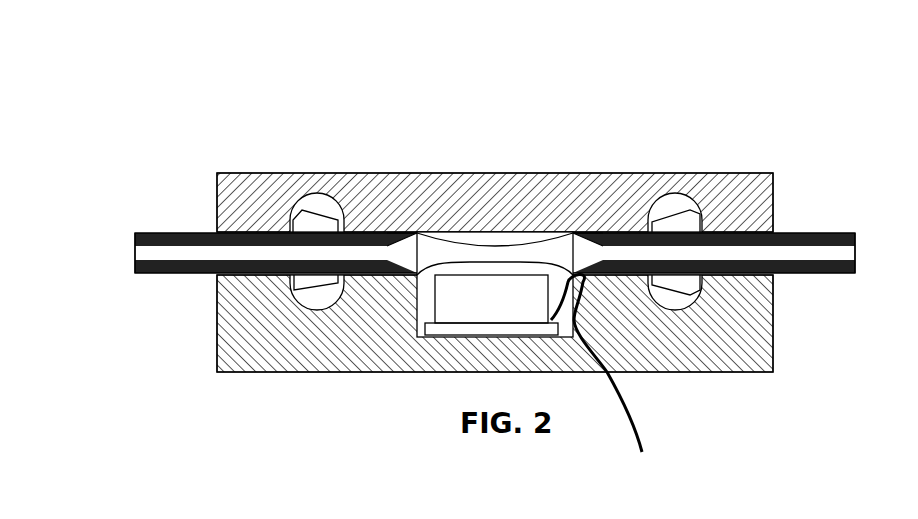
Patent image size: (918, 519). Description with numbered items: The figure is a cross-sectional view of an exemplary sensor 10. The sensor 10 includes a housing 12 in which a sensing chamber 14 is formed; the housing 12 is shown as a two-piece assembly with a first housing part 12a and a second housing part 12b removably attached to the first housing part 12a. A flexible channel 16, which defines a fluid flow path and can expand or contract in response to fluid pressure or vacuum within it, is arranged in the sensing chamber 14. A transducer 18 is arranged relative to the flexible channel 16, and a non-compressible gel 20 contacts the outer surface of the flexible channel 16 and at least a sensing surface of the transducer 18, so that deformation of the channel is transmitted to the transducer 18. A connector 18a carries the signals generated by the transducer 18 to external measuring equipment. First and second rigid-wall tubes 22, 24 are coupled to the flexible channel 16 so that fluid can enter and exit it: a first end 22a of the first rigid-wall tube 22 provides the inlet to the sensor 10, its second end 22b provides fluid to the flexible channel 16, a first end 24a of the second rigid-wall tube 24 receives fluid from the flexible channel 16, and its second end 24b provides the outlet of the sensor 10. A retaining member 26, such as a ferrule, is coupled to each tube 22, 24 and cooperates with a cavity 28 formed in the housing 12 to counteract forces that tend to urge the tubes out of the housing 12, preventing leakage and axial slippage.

The sensor 10 is at (747, 125).
The housing 12 is at (215, 347).
The first housing part 12a is at (337, 348).
The second housing part 12b is at (495, 205).
The sensing chamber 14 is at (417, 315).
The flexible channel 16 is at (487, 244).
The transducer 18 is at (472, 312).
The connector 18a is at (648, 437).
The non-compressible gel 20 is at (515, 238).
The first rigid-wall tube 22 is at (185, 232).
The first end of the first rigid-wall tube 22a is at (135, 276).
The second end of the first rigid-wall tube 22b is at (393, 235).
The second rigid-wall tube 24 is at (792, 232).
The first end of the second rigid-wall tube 24a is at (588, 235).
The second end of the second rigid-wall tube 24b is at (855, 280).
The retaining member 26 is at (297, 207).
The cavity 28 is at (315, 307).